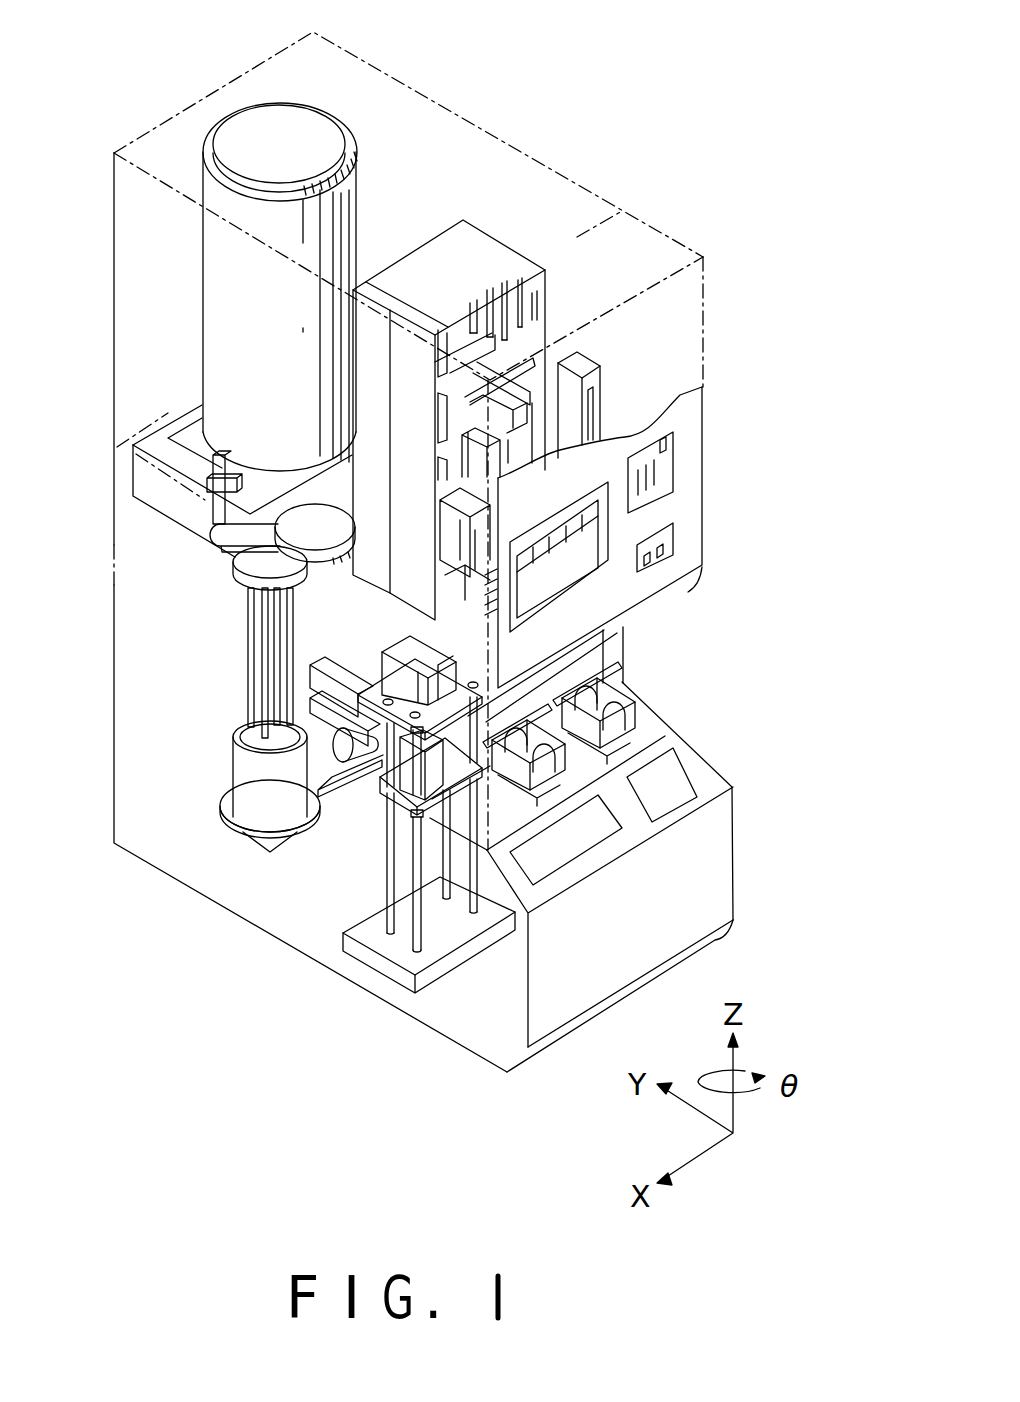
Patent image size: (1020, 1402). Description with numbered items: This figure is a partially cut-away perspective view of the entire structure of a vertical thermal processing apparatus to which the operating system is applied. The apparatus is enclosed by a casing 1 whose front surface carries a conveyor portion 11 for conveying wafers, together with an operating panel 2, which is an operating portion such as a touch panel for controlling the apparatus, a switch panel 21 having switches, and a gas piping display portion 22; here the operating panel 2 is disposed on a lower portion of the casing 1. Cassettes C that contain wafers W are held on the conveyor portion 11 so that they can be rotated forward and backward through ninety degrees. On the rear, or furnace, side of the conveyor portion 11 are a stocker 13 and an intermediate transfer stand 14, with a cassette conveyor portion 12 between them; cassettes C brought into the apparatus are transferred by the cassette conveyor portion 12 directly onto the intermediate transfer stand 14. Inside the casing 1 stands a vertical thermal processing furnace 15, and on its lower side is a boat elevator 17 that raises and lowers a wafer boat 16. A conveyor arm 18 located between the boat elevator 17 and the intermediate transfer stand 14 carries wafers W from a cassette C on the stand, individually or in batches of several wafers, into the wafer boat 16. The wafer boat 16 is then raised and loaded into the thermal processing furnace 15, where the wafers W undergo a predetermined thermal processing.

The casing 1 is at (232, 82).
The operating panel 2 is at (608, 557).
The conveyor portion 11 is at (640, 705).
The cassette conveyor portion 12 is at (590, 362).
The stocker 13 is at (503, 260).
The intermediate transfer stand 14 is at (393, 793).
The thermal processing furnace 15 is at (358, 213).
The wafer boat 16 is at (250, 627).
The boat elevator 17 is at (345, 795).
The conveyor arm 18 is at (327, 670).
The switch panel 21 is at (673, 537).
The gas piping display portion 22 is at (668, 477).
The wafers W is at (622, 728).
The cassettes C is at (603, 743).